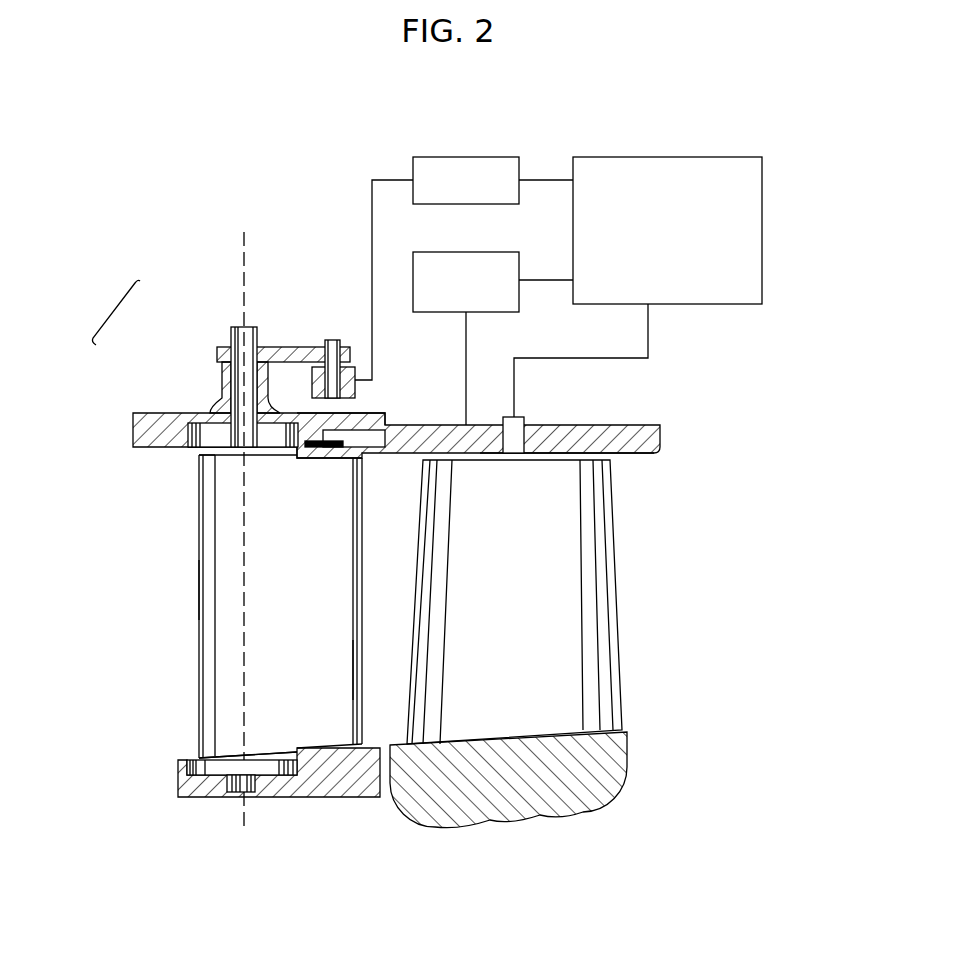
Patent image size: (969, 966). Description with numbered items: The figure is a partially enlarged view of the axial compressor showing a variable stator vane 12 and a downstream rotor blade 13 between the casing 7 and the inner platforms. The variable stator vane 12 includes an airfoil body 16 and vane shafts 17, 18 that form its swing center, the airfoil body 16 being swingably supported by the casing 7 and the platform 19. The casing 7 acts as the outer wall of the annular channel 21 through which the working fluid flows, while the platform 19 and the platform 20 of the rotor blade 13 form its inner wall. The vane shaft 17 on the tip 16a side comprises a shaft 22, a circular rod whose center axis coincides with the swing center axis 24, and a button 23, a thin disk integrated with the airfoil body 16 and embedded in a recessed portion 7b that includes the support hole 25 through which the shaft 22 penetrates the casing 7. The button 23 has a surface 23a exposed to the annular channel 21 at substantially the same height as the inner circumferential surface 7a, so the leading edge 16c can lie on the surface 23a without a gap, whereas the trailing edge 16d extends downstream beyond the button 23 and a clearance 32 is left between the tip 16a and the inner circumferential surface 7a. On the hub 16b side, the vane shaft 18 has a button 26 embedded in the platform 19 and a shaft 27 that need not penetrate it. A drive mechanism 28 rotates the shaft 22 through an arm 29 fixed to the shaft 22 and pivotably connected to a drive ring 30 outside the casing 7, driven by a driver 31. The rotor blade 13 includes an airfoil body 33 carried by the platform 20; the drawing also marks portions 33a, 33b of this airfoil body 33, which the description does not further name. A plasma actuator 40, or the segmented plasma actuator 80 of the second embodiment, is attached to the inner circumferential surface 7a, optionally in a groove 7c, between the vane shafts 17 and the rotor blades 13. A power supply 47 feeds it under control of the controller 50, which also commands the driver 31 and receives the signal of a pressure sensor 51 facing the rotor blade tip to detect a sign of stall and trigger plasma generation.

The casing 7 is at (640, 424).
The inner circumferential surface of the casing 7a is at (636, 458).
The recessed portion 7b is at (197, 426).
The groove 7c is at (322, 450).
The variable stator vane 12 is at (252, 526).
The rotor blade 13 is at (514, 602).
The airfoil body 16 is at (247, 647).
The tip 16a is at (236, 448).
The hub 16b is at (250, 760).
The leading edge 16c is at (198, 594).
The trailing edge 16d is at (357, 670).
The vane shaft 17 is at (108, 300).
The vane shaft 18 is at (267, 873).
The platform 19 is at (333, 740).
The platform 20 is at (550, 740).
The annular channel 21 is at (385, 600).
The shaft 22 is at (222, 392).
The button 23 is at (210, 412).
The surface of the button 23a is at (290, 448).
The swing center axis 24 is at (244, 243).
The support hole 25 is at (230, 337).
The button 26 is at (212, 774).
The shaft 27 is at (243, 790).
The drive mechanism 28 is at (306, 262).
The arm 29 is at (278, 347).
The drive ring 30 is at (355, 365).
The driver 31 is at (497, 157).
The clearance 32 is at (362, 456).
The airfoil body 33 is at (565, 648).
The inner surface of elastic layer 33a is at (410, 667).
The outer surface of elastic layer 33b is at (543, 445).
The plasma actuator 40 is at (368, 421).
The plasma actuator 80 is at (371, 397).
The power supply 47 is at (497, 252).
The controller 50 is at (697, 157).
The pressure sensor 51 is at (525, 416).